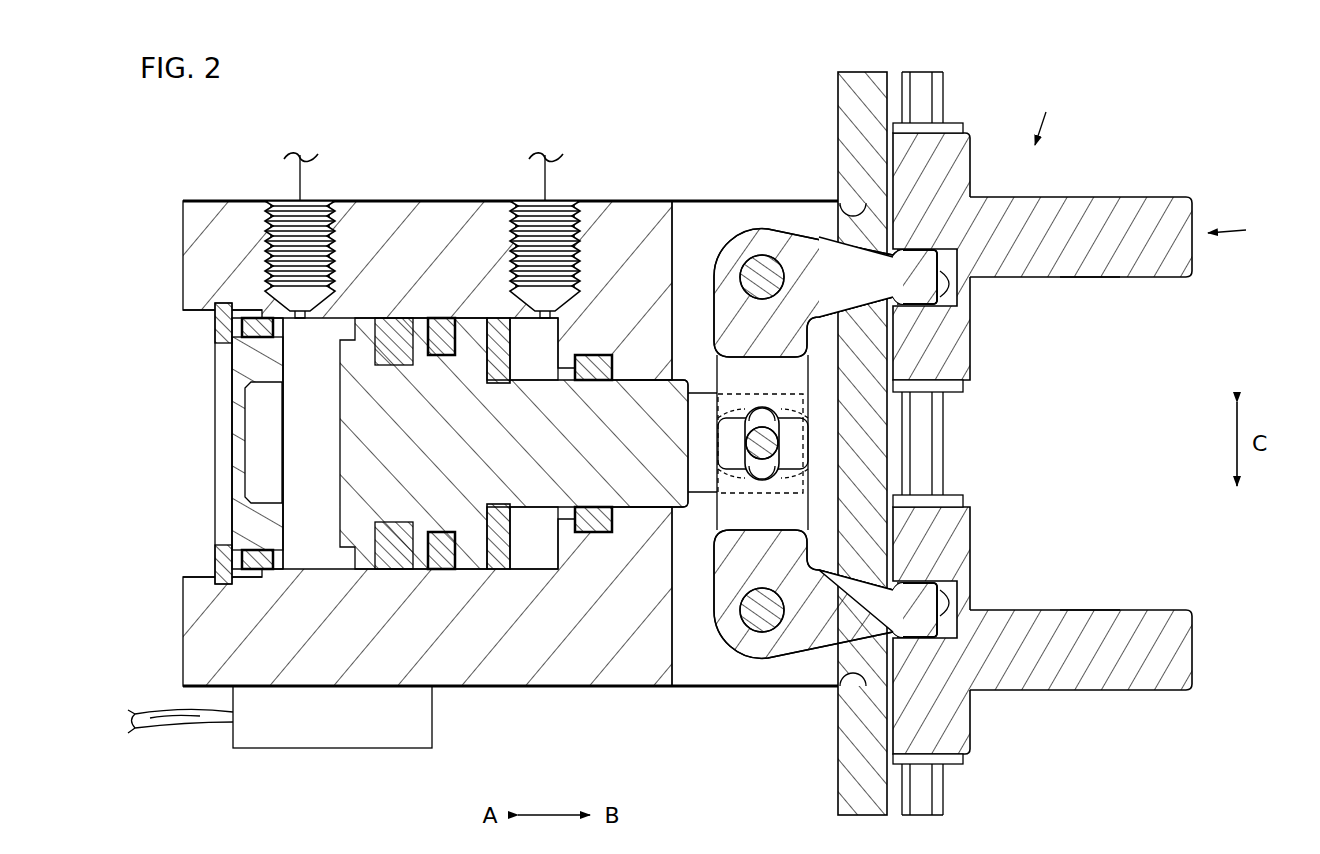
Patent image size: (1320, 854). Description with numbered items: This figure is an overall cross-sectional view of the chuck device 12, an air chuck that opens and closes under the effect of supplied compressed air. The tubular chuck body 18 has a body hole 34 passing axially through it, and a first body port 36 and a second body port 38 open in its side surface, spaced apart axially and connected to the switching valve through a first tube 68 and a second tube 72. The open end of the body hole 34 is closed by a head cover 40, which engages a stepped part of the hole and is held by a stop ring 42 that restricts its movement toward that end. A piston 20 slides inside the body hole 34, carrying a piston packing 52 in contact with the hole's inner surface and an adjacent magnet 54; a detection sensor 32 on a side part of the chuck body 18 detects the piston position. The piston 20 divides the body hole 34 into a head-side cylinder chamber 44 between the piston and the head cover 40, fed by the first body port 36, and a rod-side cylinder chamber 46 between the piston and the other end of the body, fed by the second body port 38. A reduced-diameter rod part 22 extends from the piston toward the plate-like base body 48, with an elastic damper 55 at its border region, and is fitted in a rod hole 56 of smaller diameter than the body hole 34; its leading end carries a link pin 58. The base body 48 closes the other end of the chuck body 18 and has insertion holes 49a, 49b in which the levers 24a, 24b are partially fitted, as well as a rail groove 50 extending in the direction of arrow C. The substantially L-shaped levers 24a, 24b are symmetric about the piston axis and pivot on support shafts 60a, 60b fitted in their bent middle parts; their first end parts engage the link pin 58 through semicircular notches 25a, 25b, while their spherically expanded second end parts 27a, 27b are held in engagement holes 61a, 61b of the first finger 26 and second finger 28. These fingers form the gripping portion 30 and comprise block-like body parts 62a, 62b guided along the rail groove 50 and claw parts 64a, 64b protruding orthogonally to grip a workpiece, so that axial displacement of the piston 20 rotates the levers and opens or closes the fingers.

The chuck device 12 is at (1049, 116).
The chuck body 18 is at (497, 690).
The piston 20 is at (352, 443).
The rod part 22 is at (655, 388).
The lever 24a is at (775, 238).
The lever 24b is at (774, 652).
The semicircular notch 25a is at (763, 410).
The semicircular notch 25b is at (763, 479).
The first finger 26 is at (1101, 193).
The second end part 27a is at (907, 300).
The second end part 27b is at (907, 588).
The second finger 28 is at (1101, 695).
The gripping portion 30 is at (1242, 228).
The detection sensor 32 is at (324, 730).
The body hole 34 is at (199, 313).
The first body port 36 is at (318, 222).
The second body port 38 is at (560, 222).
The head cover 40 is at (268, 534).
The stop ring 42 is at (214, 565).
The head-side cylinder chamber 44 is at (325, 332).
The rod-side cylinder chamber 46 is at (514, 569).
The base body 48 is at (850, 787).
The insertion hole 49a is at (840, 205).
The insertion hole 49b is at (840, 684).
The rail groove 50 is at (918, 798).
The piston packing 52 is at (437, 567).
The magnet 54 is at (388, 567).
The damper 55 is at (507, 373).
The rod hole 56 is at (637, 503).
The link pin 58 is at (757, 450).
The support shaft 60a is at (754, 265).
The support shaft 60b is at (746, 632).
The engagement hole 61a is at (952, 289).
The engagement hole 61b is at (952, 599).
The body part 62a is at (952, 348).
The body part 62b is at (952, 541).
The claw part 64a is at (1098, 267).
The claw part 64b is at (1098, 624).
The first tube 68 is at (298, 179).
The second tube 72 is at (543, 179).